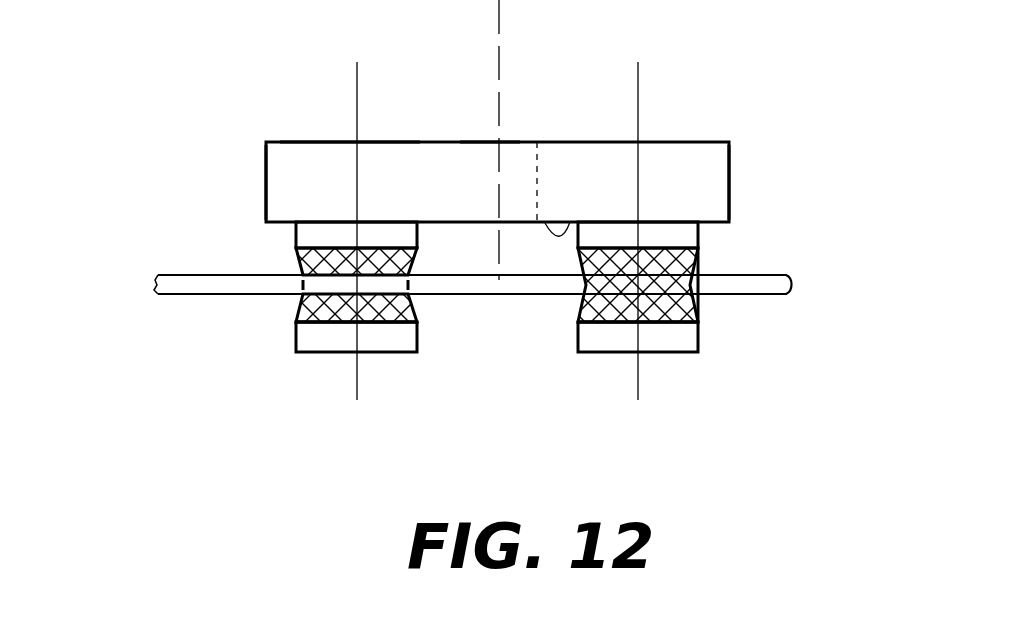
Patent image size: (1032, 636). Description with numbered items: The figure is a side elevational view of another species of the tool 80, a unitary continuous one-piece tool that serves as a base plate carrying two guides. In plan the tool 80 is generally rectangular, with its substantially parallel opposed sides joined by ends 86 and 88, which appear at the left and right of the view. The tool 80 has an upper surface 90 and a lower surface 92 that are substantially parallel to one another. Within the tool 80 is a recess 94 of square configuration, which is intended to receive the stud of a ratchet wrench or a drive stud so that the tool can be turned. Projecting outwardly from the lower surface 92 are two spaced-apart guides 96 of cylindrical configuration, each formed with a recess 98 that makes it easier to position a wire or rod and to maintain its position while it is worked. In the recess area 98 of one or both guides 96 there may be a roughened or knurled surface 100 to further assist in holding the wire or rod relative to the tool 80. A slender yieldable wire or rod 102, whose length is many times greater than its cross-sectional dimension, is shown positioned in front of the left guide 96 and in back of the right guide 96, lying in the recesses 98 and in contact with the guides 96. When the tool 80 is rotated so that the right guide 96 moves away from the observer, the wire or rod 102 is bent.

The tool 80 is at (672, 140).
The end 86 is at (266, 158).
The end 88 is at (730, 152).
The upper surface 90 is at (415, 140).
The lower surface 92 is at (570, 222).
The recess 94 is at (487, 162).
The guide 96 is at (290, 240).
The recess 98 is at (415, 310).
The roughened surface 100 is at (695, 307).
The wire 102 is at (282, 285).